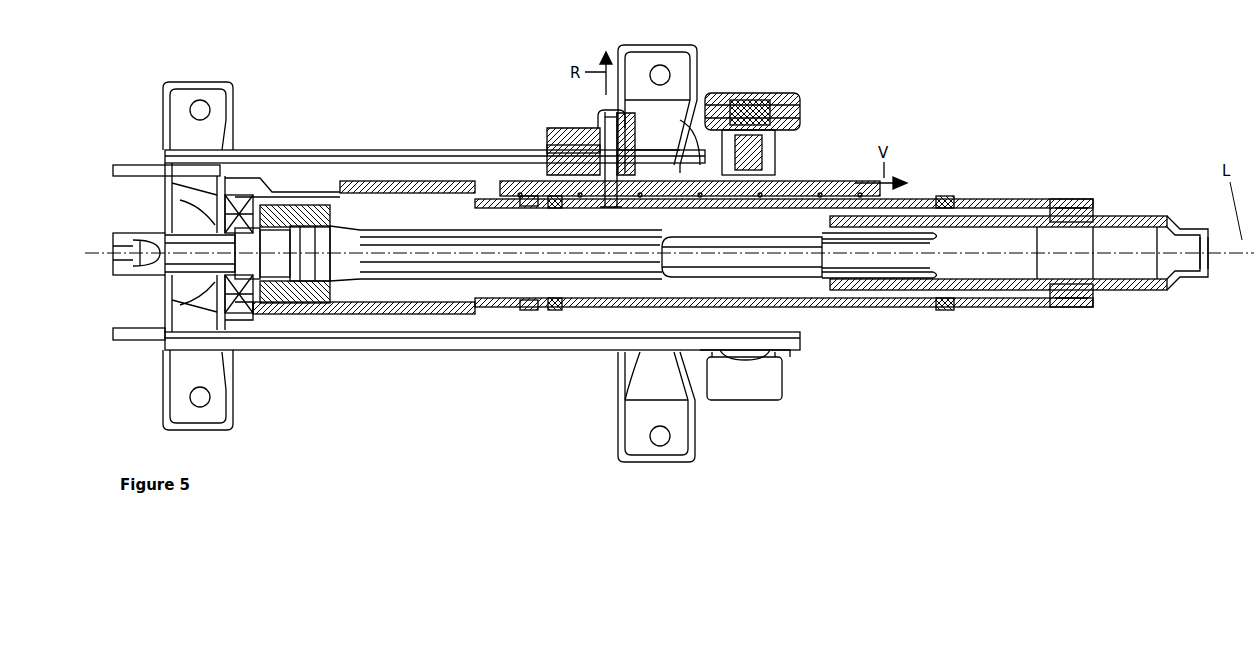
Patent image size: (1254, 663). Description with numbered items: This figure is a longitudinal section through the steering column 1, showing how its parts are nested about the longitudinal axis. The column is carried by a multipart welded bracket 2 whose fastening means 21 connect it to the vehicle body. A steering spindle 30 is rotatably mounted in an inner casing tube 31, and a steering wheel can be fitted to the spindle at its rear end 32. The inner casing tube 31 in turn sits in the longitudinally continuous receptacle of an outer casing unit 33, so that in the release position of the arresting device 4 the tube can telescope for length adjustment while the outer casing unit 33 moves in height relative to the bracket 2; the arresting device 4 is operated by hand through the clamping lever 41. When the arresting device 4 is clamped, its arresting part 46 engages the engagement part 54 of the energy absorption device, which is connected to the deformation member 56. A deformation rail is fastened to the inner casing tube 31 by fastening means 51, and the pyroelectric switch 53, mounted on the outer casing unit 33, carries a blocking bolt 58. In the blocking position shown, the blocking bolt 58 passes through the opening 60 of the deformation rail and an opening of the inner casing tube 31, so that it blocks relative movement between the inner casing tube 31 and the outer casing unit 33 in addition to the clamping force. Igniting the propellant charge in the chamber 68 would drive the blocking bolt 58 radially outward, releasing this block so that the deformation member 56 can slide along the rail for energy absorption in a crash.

The steering column 1 is at (900, 91).
The bracket 2 is at (373, 153).
The arresting device 4 is at (801, 67).
The fastening means 21 is at (208, 93).
The steering spindle 30 is at (1113, 217).
The inner casing tube 31 is at (1023, 200).
The rear end 32 is at (1192, 283).
The outer casing unit 33 is at (357, 183).
The clamping lever 41 is at (773, 102).
The arresting part 46 is at (757, 113).
The fastening means 51 is at (557, 200).
The pyroelectric switch 53 is at (550, 132).
The engagement part 54 is at (807, 187).
The deformation member 56 is at (537, 193).
The blocking bolt 58 is at (553, 150).
The opening 60 is at (672, 230).
The chamber 68 is at (610, 128).